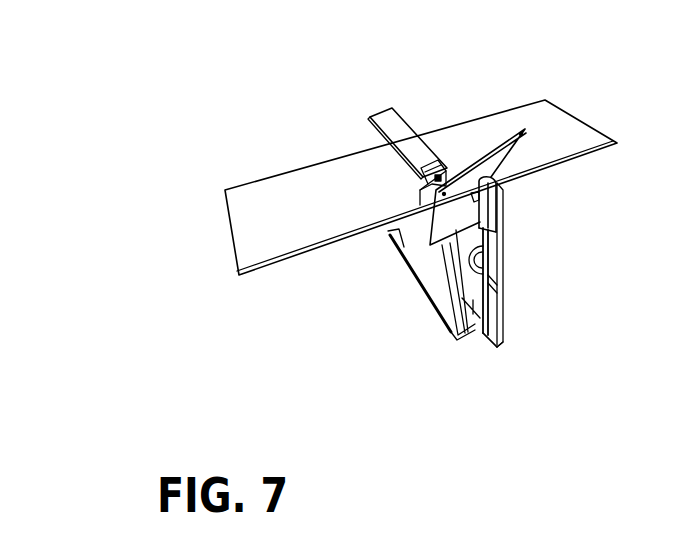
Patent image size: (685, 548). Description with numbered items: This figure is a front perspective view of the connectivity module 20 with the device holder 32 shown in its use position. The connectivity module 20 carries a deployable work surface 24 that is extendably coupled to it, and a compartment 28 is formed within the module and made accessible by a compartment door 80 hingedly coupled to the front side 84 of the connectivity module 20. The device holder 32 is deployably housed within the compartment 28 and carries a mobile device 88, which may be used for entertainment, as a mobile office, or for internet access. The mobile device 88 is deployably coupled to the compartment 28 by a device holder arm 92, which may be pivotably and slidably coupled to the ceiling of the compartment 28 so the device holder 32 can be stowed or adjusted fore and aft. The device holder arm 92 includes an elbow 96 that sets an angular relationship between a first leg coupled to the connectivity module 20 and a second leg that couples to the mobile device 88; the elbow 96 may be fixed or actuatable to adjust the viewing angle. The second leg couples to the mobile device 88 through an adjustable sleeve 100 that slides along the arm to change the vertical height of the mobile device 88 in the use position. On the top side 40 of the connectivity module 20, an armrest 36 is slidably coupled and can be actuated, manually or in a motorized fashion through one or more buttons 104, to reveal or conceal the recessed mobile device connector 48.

The connectivity module 20 is at (289, 117).
The work surface 24 is at (315, 225).
The compartment 28 is at (477, 338).
The device holder 32 is at (502, 219).
The armrest 36 is at (388, 122).
The top side 40 is at (438, 167).
The mobile device connector 48 is at (430, 184).
The compartment door 80 is at (503, 322).
The front side 84 is at (468, 338).
The mobile device 88 is at (506, 165).
The device holder arm 92 is at (486, 280).
The elbow 96 is at (500, 258).
The sleeve 100 is at (498, 206).
The buttons 104 is at (437, 165).